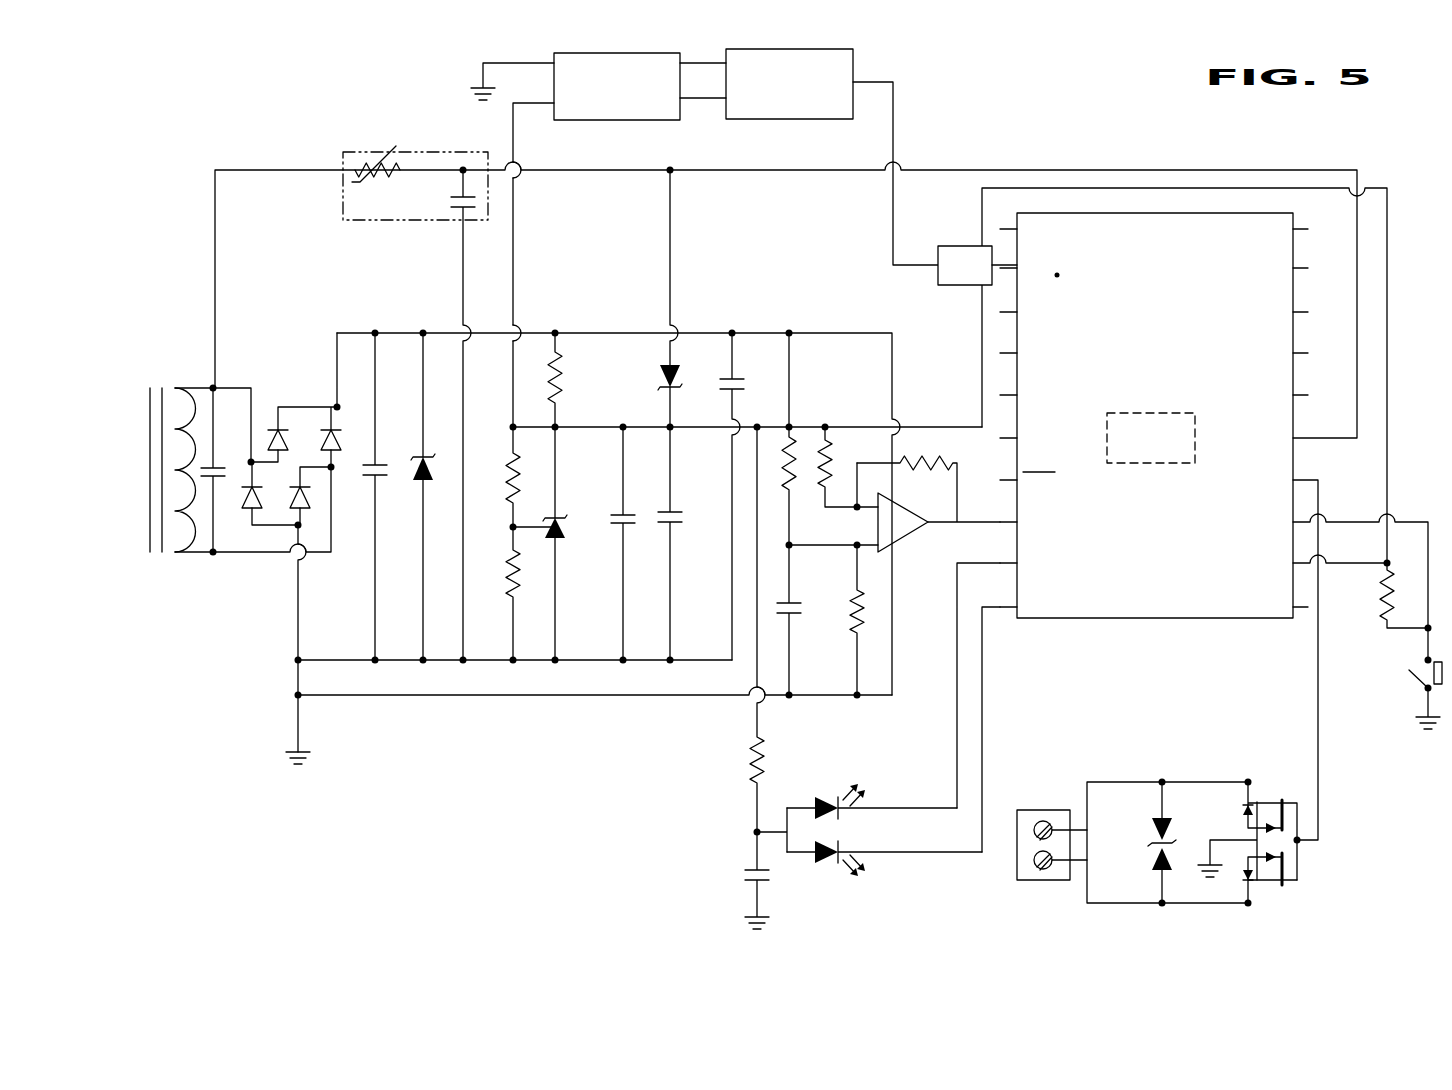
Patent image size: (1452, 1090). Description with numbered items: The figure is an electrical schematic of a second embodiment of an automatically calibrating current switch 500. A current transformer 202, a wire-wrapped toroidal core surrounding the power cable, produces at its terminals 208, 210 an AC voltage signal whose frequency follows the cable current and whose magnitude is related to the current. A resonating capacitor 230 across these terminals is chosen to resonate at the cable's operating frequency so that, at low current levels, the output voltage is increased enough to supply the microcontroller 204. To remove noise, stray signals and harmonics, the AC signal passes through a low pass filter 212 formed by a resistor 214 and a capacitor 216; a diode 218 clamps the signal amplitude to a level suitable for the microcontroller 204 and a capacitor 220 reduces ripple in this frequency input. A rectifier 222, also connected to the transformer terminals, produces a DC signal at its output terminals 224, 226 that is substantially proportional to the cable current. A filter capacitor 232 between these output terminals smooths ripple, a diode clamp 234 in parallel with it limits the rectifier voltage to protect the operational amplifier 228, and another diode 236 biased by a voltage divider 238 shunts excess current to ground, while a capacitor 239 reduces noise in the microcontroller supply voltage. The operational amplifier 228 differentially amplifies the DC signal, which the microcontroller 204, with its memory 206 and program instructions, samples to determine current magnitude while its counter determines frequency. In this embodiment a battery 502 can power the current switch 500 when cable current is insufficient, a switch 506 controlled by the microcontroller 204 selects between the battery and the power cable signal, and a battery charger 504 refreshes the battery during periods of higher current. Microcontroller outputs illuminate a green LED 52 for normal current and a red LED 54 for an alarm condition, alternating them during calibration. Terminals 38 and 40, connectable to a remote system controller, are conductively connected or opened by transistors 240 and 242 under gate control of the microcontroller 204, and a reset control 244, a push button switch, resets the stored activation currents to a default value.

The current switch 500 is at (410, 750).
The current transformer 202 is at (183, 555).
The terminal 208 is at (213, 388).
The terminal 210 is at (217, 556).
The low pass filter 212 is at (428, 385).
The resistor 214 is at (396, 146).
The capacitor 216 is at (470, 209).
The diode 218 is at (652, 369).
The capacitor 220 is at (697, 490).
The rectifier 222 is at (302, 392).
The output terminal 224 is at (376, 331).
The output terminal 226 is at (293, 661).
The operational amplifier 228 is at (918, 527).
The resonating capacitor 230 is at (218, 478).
The filter capacitor 232 is at (378, 463).
The diode clamp 234 is at (418, 482).
The diode 236 is at (560, 513).
The voltage divider 238 is at (496, 452).
The capacitor 239 is at (618, 527).
The transistor 240 is at (1268, 800).
The transistor 242 is at (1266, 885).
The reset control 244 is at (1423, 677).
The microcontroller 204 is at (1181, 442).
The memory 206 is at (1134, 453).
The battery 502 is at (777, 122).
The battery charger 504 is at (628, 122).
The switch 506 is at (937, 273).
The green LED 52 is at (823, 803).
The red LED 54 is at (827, 863).
The terminal 38 is at (1050, 822).
The terminal 40 is at (1048, 865).